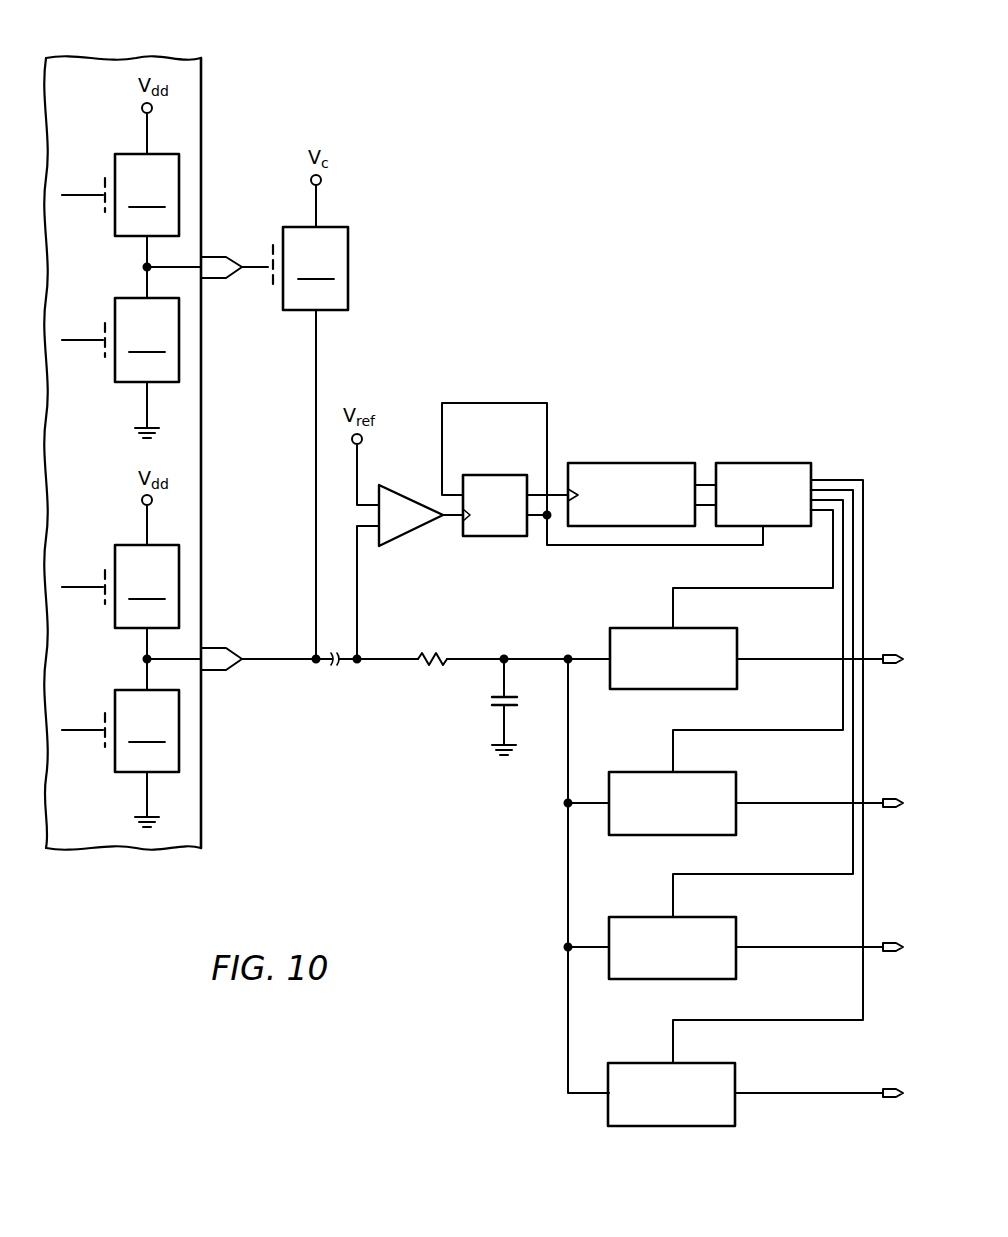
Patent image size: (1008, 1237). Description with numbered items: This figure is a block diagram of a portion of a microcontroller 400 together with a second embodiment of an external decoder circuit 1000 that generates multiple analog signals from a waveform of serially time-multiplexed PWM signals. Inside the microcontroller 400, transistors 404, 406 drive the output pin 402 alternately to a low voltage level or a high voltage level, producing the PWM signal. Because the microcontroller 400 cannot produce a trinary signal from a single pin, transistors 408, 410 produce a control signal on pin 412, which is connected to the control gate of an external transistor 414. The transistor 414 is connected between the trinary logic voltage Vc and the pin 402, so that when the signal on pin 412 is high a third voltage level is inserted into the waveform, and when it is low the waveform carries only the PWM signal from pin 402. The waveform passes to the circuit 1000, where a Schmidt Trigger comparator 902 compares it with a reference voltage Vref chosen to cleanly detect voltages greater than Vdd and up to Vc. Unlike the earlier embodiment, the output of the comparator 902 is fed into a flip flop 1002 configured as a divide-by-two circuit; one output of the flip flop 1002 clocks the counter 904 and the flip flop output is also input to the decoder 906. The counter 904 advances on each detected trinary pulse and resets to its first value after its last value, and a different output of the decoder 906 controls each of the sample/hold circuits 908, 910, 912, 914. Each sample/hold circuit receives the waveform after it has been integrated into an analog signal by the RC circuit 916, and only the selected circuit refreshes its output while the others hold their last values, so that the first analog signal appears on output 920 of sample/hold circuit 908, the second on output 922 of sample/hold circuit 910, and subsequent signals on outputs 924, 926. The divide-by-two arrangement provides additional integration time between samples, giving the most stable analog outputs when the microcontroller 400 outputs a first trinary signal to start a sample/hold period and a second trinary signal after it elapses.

The microcontroller 400 is at (115, 58).
The output pin 402 is at (212, 648).
The transistor 404 is at (120, 586).
The transistor 406 is at (120, 731).
The transistor 408 is at (120, 195).
The transistor 410 is at (120, 340).
The pin 412 is at (212, 257).
The transistor 414 is at (310, 268).
The Schmidt Trigger comparator 902 is at (412, 532).
The counter 904 is at (632, 463).
The decoder 906 is at (766, 463).
The sample/hold circuit 908 is at (640, 628).
The sample/hold circuit 910 is at (640, 772).
The sample/hold circuit 912 is at (640, 917).
The sample/hold circuit 914 is at (640, 1063).
The RC circuit 916 is at (451, 714).
The output 920 is at (790, 657).
The output 922 is at (788, 802).
The output 924 is at (788, 946).
The output 926 is at (787, 1092).
The external decoder circuit 1000 is at (606, 212).
The flip flop 1002 is at (490, 475).